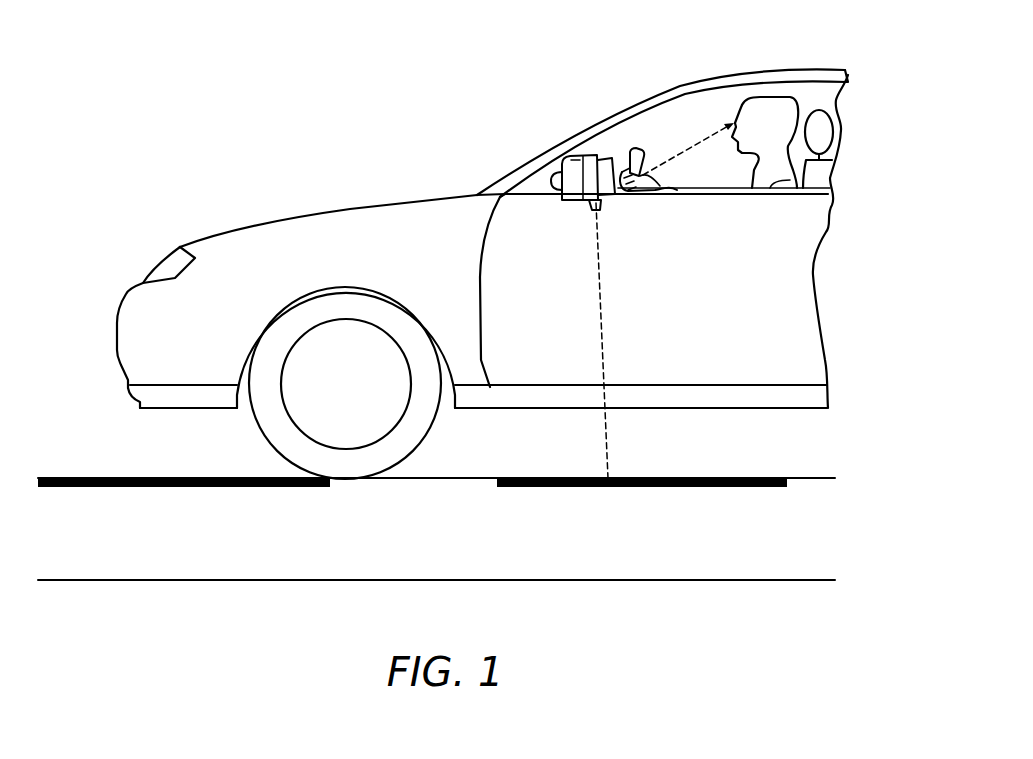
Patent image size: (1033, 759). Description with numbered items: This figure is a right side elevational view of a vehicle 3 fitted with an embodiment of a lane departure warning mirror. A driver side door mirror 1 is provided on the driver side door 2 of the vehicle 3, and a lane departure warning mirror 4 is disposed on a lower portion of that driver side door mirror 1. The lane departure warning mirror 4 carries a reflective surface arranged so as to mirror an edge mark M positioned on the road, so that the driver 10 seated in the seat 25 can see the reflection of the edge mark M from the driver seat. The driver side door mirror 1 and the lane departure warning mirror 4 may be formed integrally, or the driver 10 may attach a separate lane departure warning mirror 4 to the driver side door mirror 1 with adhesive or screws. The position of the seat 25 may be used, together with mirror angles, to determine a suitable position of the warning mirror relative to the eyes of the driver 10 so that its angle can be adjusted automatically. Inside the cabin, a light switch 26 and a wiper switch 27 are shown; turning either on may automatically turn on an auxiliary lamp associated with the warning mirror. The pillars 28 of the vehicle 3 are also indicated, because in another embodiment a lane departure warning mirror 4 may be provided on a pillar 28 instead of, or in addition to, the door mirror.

The driver side door mirror 1 is at (577, 193).
The driver side door 2 is at (698, 368).
The vehicle 3 is at (760, 51).
The lane departure warning mirror 4 is at (592, 208).
The driver 10 is at (785, 110).
The seat 25 is at (821, 173).
The light switch 26 is at (586, 155).
The wiper switch 27 is at (624, 170).
The pillar 28 is at (507, 188).
The edge mark M is at (708, 487).